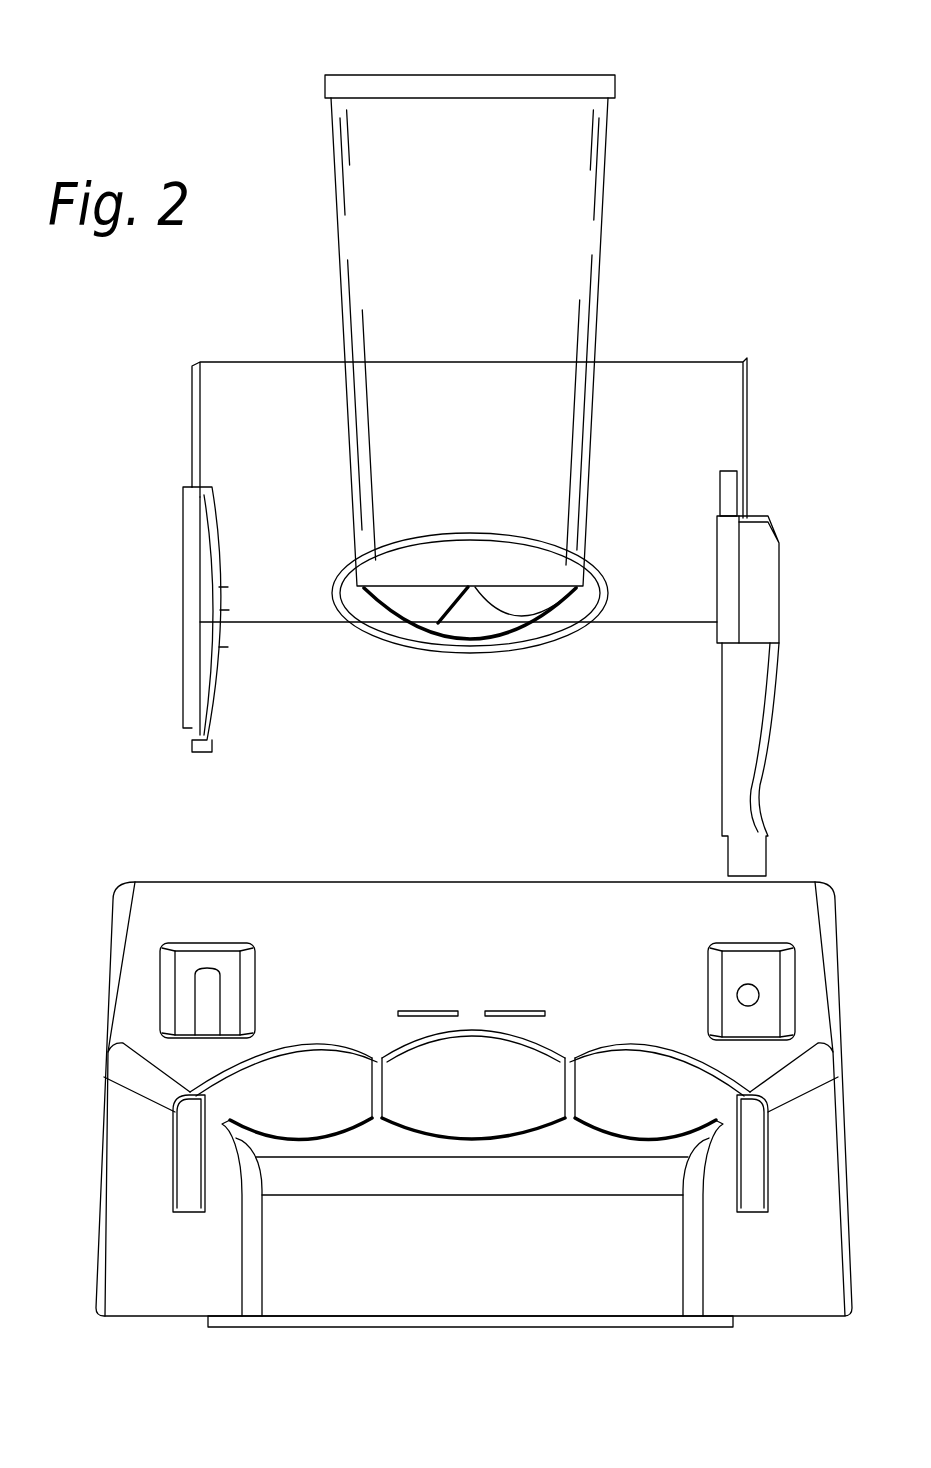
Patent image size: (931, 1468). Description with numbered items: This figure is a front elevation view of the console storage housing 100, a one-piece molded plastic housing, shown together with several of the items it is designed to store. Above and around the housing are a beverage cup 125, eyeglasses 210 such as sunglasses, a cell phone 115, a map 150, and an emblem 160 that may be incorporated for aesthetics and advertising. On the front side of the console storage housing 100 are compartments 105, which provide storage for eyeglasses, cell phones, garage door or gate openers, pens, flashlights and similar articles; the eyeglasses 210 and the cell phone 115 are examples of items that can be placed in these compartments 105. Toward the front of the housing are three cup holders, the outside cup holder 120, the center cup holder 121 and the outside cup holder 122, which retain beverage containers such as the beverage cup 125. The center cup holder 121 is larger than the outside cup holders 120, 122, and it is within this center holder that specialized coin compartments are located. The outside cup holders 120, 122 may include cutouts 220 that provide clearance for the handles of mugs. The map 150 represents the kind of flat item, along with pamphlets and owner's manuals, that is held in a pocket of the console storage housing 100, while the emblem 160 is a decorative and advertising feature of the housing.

The console storage housing 100 is at (392, 845).
The compartments 105 is at (232, 960).
The cell phone 115 is at (739, 717).
The cup holder 120 is at (290, 1052).
The center cup holder 121 is at (466, 1045).
The cup holder 122 is at (648, 1112).
The beverage cup 125 is at (472, 169).
The map 150 is at (684, 426).
The emblem 160 is at (466, 640).
The eyeglasses 210 is at (217, 717).
The cutouts 220 is at (200, 1135).